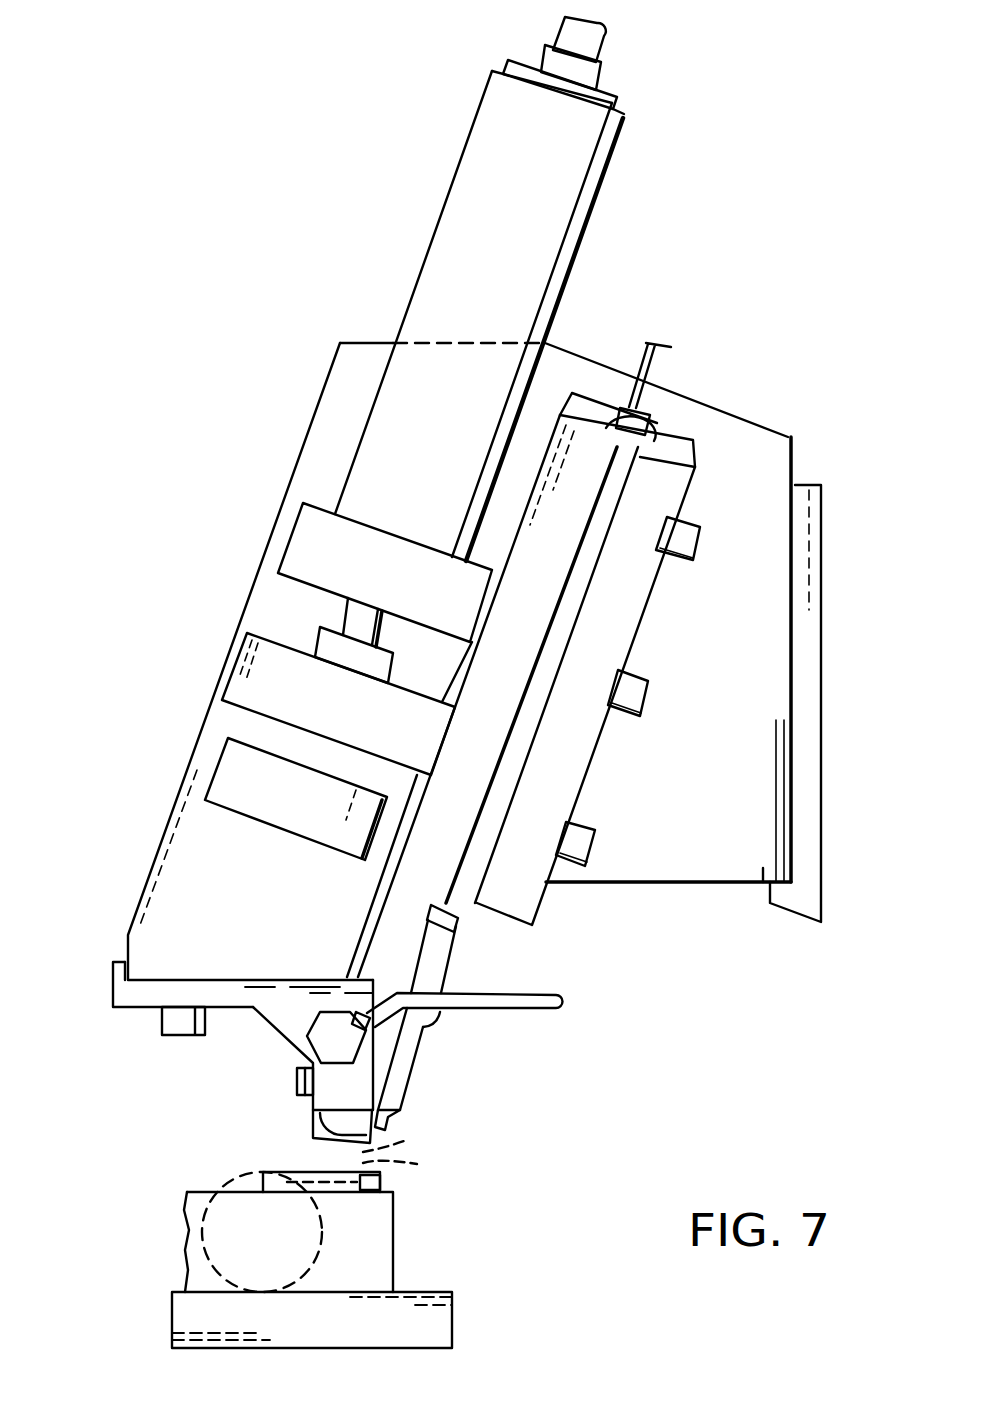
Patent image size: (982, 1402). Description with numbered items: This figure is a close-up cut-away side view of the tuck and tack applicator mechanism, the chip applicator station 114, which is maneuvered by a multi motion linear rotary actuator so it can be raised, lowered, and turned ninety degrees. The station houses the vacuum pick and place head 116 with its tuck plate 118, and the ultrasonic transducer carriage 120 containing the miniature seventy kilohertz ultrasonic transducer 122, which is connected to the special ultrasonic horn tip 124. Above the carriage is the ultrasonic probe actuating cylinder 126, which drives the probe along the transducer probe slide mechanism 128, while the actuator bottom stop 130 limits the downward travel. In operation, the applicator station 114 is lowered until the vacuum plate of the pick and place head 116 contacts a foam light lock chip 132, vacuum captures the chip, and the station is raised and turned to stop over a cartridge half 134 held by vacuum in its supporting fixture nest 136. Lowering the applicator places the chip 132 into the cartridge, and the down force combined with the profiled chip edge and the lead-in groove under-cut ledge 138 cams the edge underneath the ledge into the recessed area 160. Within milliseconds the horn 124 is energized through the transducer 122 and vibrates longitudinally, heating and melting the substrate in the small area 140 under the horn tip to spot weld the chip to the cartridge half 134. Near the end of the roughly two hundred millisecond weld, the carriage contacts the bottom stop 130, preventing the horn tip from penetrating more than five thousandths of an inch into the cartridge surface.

The chip applicator station 114 is at (245, 272).
The vacuum pick and place head 116 is at (152, 1068).
The tuck plate 118 is at (303, 1102).
The ultrasonic transducer carriage 120 is at (568, 612).
The ultrasonic transducer 122 is at (542, 675).
The ultrasonic horn tip 124 is at (410, 1050).
The ultrasonic probe actuating cylinder 126 is at (485, 138).
The transducer probe slide mechanism 128 is at (733, 486).
The actuator bottom stop 130 is at (243, 773).
The foam light lock chip 132 is at (411, 1136).
The cartridge half 134 is at (372, 1197).
The supporting fixture nest 136 is at (370, 1243).
The lead-in groove under-cut ledge 138 is at (278, 1175).
The weld area 140 is at (414, 1166).
The recessed area 160 is at (332, 1168).